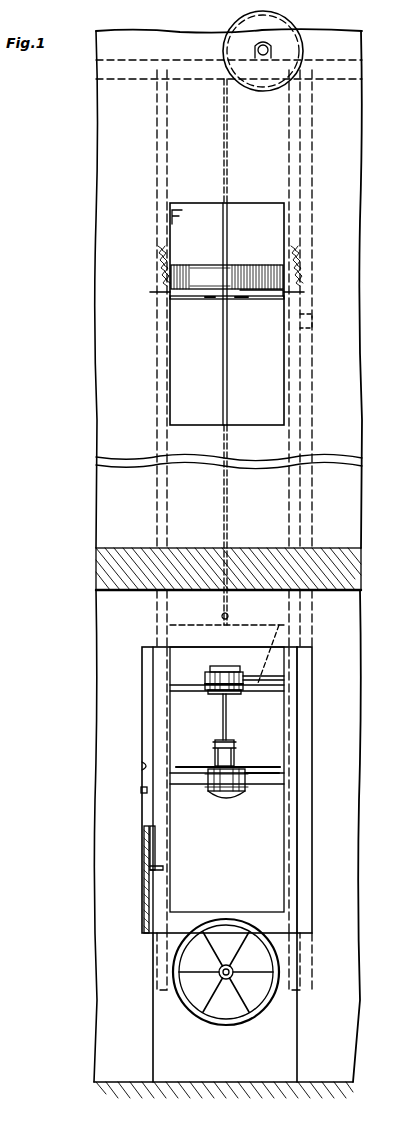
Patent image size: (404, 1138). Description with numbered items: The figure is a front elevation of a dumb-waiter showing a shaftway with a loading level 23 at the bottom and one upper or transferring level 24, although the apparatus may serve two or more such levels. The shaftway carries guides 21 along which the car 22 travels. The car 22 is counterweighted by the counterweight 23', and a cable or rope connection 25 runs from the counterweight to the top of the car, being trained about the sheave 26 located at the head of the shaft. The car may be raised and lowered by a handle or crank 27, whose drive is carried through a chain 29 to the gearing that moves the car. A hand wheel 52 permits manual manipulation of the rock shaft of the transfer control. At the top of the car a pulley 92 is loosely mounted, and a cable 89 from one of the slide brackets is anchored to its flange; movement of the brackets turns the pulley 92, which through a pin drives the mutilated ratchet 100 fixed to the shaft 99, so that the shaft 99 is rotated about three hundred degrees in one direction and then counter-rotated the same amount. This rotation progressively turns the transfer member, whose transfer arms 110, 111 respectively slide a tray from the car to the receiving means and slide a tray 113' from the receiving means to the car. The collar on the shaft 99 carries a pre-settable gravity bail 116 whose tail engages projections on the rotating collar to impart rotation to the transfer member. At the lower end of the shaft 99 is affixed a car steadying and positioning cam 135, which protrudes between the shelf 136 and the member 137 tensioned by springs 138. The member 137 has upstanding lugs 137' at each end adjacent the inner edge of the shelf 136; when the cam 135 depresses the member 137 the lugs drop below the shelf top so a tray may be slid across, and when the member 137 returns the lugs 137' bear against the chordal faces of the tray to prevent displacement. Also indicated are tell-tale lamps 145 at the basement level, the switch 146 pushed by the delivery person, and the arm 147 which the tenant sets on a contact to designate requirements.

The guides 21 is at (160, 510).
The car 22 is at (270, 918).
The loading level 23 is at (196, 837).
The counterweight 23' is at (323, 324).
The transferring level 24 is at (204, 314).
The cable connection 25 is at (228, 403).
The sheave 26 is at (240, 30).
The handle or crank 27 is at (156, 868).
The chain 29 is at (150, 893).
The hand wheel 52 is at (227, 1026).
The cable 89 is at (280, 676).
The pulley 92 is at (225, 673).
The shaft 99 is at (228, 714).
The mutilated ratchet 100 is at (212, 688).
The transfer arm 110 is at (270, 772).
The transfer arm 111 is at (186, 767).
The tray 113' is at (227, 263).
The gravity bail 116 is at (234, 752).
The car steadying and positioning cam 135 is at (213, 798).
The shelf 136 is at (262, 300).
The member 137 is at (227, 311).
The upstanding lugs 137' is at (230, 305).
The springs 138 is at (160, 255).
The tell-tale lamps 145 is at (143, 762).
The switch 146 is at (142, 792).
The arm 147 is at (195, 218).